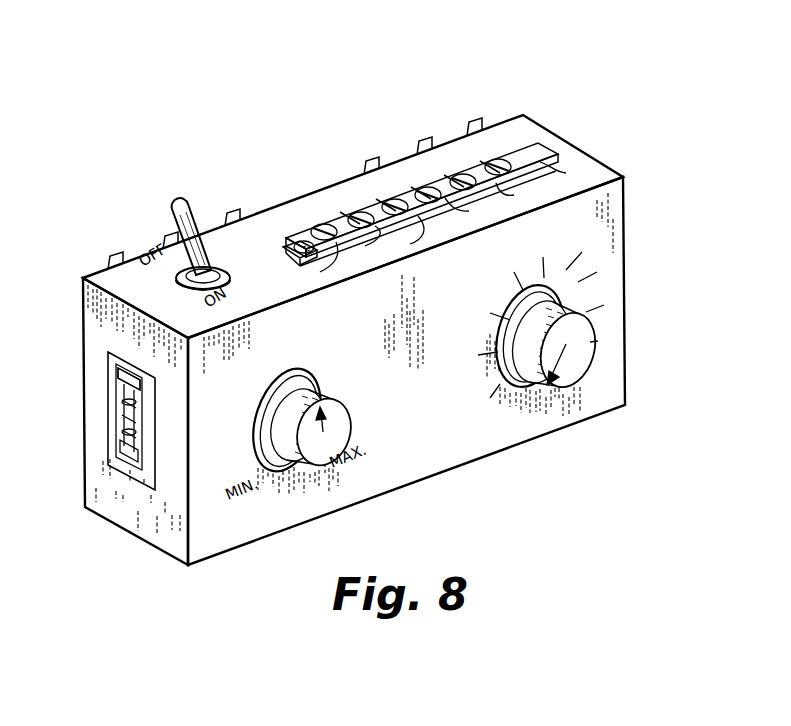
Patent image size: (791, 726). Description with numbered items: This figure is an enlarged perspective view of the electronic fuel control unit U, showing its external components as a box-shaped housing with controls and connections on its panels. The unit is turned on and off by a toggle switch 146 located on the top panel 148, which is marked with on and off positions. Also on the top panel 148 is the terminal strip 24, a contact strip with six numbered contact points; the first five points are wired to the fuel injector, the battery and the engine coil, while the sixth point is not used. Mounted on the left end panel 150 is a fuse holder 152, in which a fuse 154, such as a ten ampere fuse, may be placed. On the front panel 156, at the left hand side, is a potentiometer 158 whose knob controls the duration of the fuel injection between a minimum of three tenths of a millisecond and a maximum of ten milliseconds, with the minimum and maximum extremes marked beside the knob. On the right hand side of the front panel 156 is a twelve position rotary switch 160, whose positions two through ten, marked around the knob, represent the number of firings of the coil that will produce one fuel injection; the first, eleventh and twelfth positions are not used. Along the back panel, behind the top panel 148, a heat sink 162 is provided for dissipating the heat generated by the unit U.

The electronic fuel control unit U is at (593, 152).
The terminal strip 24 is at (510, 145).
The toggle switch 146 is at (190, 215).
The top panel 148 is at (264, 232).
The left end panel 150 is at (170, 527).
The fuse holder 152 is at (116, 448).
The fuse 154 is at (118, 390).
The front panel 156 is at (435, 450).
The potentiometer 158 is at (326, 452).
The twelve position rotary switch 160 is at (572, 362).
The heat sink 162 is at (228, 213).